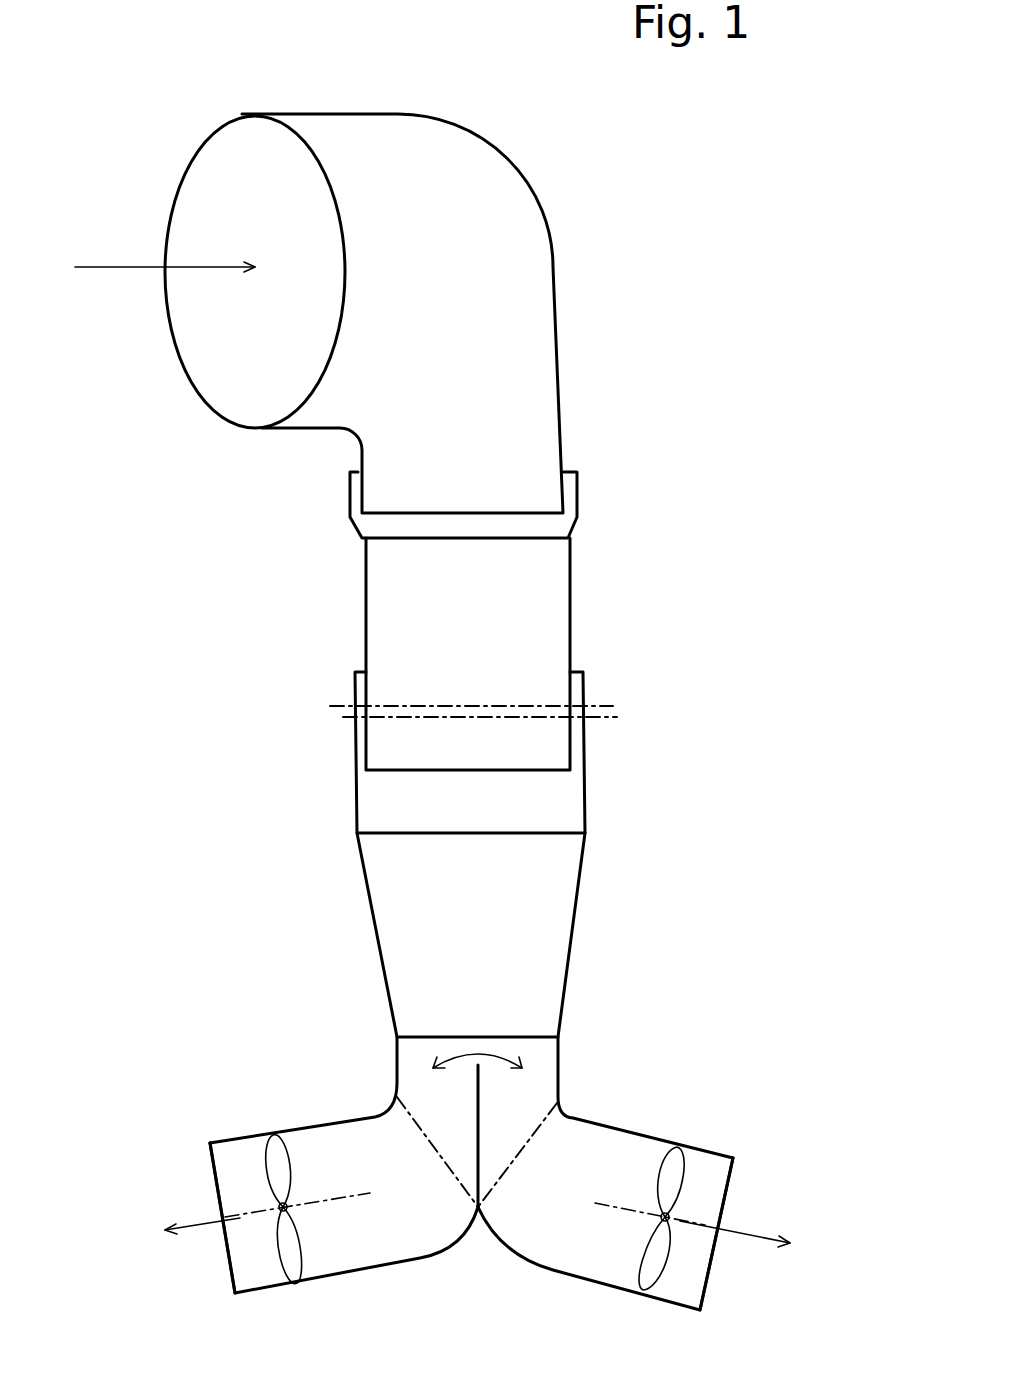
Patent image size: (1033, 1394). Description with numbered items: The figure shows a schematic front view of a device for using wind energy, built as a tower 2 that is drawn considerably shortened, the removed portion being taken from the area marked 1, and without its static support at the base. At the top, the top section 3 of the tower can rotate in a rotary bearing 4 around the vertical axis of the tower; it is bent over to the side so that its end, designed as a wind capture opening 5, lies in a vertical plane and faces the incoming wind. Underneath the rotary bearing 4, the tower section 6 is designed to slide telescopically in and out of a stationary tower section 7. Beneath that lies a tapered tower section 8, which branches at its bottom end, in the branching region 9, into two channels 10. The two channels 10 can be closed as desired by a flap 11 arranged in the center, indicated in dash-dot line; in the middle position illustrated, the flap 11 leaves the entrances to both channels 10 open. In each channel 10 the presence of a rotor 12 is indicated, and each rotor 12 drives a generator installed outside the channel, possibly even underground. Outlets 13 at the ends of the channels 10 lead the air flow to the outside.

The area of removed tower portion 1 is at (340, 711).
The tower 2 is at (185, 452).
The top section 3 is at (457, 326).
The rotary bearing 4 is at (568, 487).
The wind capture opening 5 is at (237, 172).
The tower section 6 is at (482, 628).
The stationary tower section 7 is at (480, 817).
The tapered tower section 8 is at (488, 942).
The branching section 9 is at (365, 1075).
The channels 10 is at (390, 1196).
The flap 11 is at (481, 1103).
The rotor 12 is at (275, 1160).
The outlets 13 is at (225, 1258).